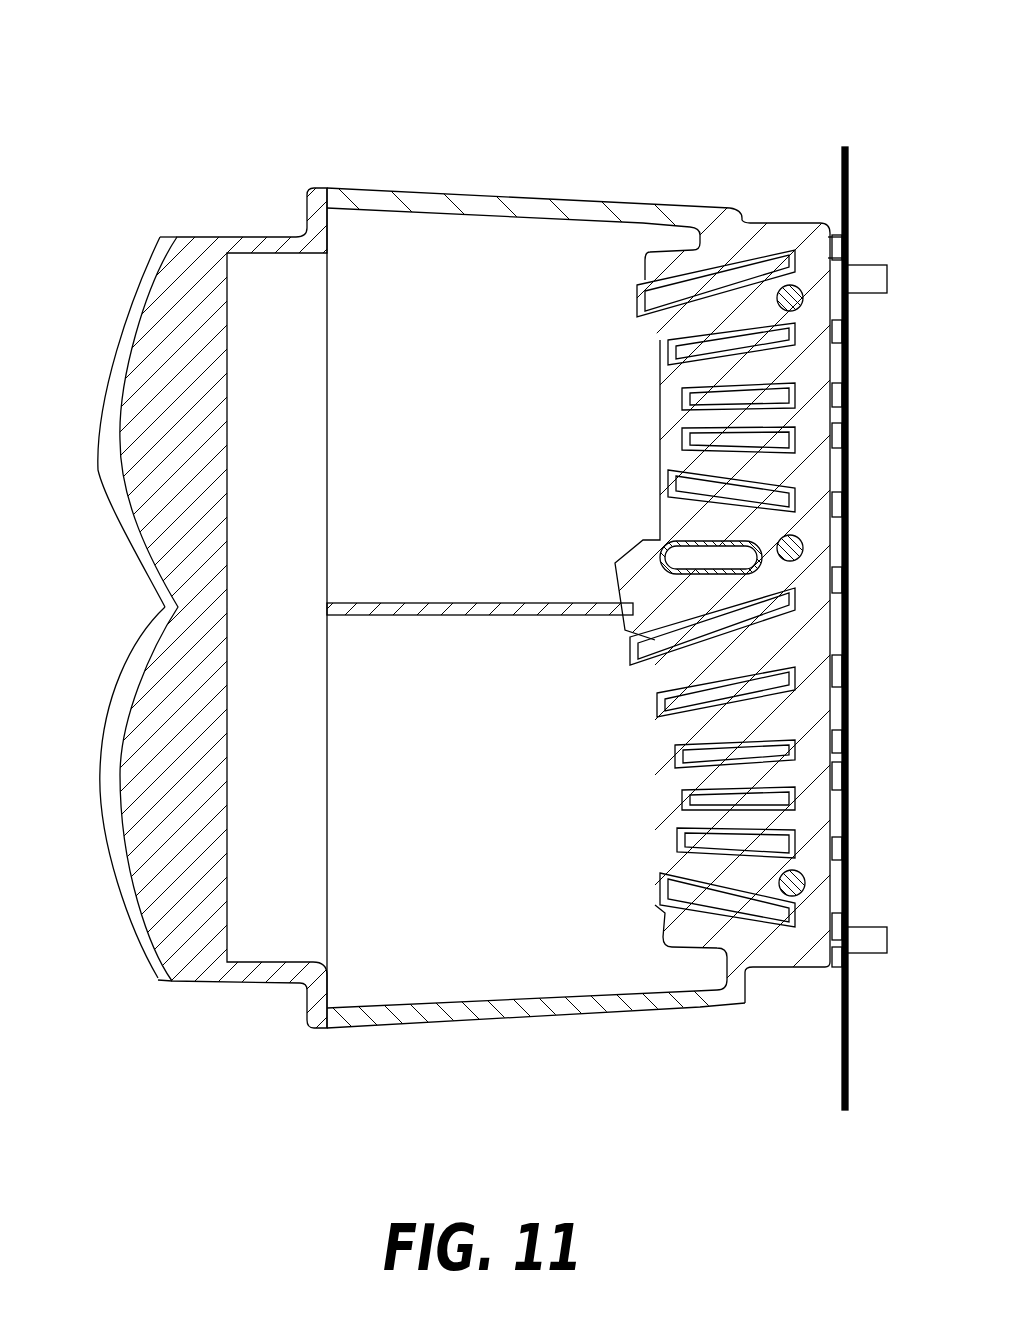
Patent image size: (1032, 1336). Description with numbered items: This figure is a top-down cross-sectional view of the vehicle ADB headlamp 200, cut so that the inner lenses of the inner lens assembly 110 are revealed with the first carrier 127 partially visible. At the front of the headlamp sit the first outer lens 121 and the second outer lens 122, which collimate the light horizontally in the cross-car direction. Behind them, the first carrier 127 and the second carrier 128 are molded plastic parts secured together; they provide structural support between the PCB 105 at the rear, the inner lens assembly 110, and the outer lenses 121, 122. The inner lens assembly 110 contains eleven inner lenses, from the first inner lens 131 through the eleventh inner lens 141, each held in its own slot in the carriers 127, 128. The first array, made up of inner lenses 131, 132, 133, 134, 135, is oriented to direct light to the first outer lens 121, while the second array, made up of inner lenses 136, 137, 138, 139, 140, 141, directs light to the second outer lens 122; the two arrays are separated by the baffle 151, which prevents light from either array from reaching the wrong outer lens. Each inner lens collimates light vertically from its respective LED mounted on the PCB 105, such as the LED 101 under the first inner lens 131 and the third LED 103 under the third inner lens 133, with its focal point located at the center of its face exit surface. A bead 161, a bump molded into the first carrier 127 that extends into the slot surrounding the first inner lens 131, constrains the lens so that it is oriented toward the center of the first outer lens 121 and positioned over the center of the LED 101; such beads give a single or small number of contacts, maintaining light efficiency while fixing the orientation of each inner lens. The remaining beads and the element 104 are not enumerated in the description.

The vehicle ADB headlamp 200 is at (203, 60).
The first outer lens 121 is at (105, 423).
The second outer lens 122 is at (105, 791).
The baffle 151 is at (413, 603).
The first carrier 127 is at (743, 225).
The second carrier 128 is at (571, 1013).
The inner lens assembly 110 is at (578, 619).
The PCB 105 is at (847, 192).
The LED 101 is at (843, 242).
The third LED 103 is at (845, 393).
The solder pad 104 is at (845, 447).
The bead 161 is at (797, 278).
The first inner lens 131 is at (650, 293).
The second inner lens 132 is at (680, 348).
The third inner lens 133 is at (687, 397).
The fourth inner lens 134 is at (690, 433).
The fifth inner lens 135 is at (677, 480).
The sixth inner lens 136 is at (643, 642).
The seventh inner lens 137 is at (672, 700).
The eighth inner lens 138 is at (683, 753).
The ninth inner lens 139 is at (687, 800).
The tenth inner lens 140 is at (685, 837).
The eleventh inner lens 141 is at (665, 890).